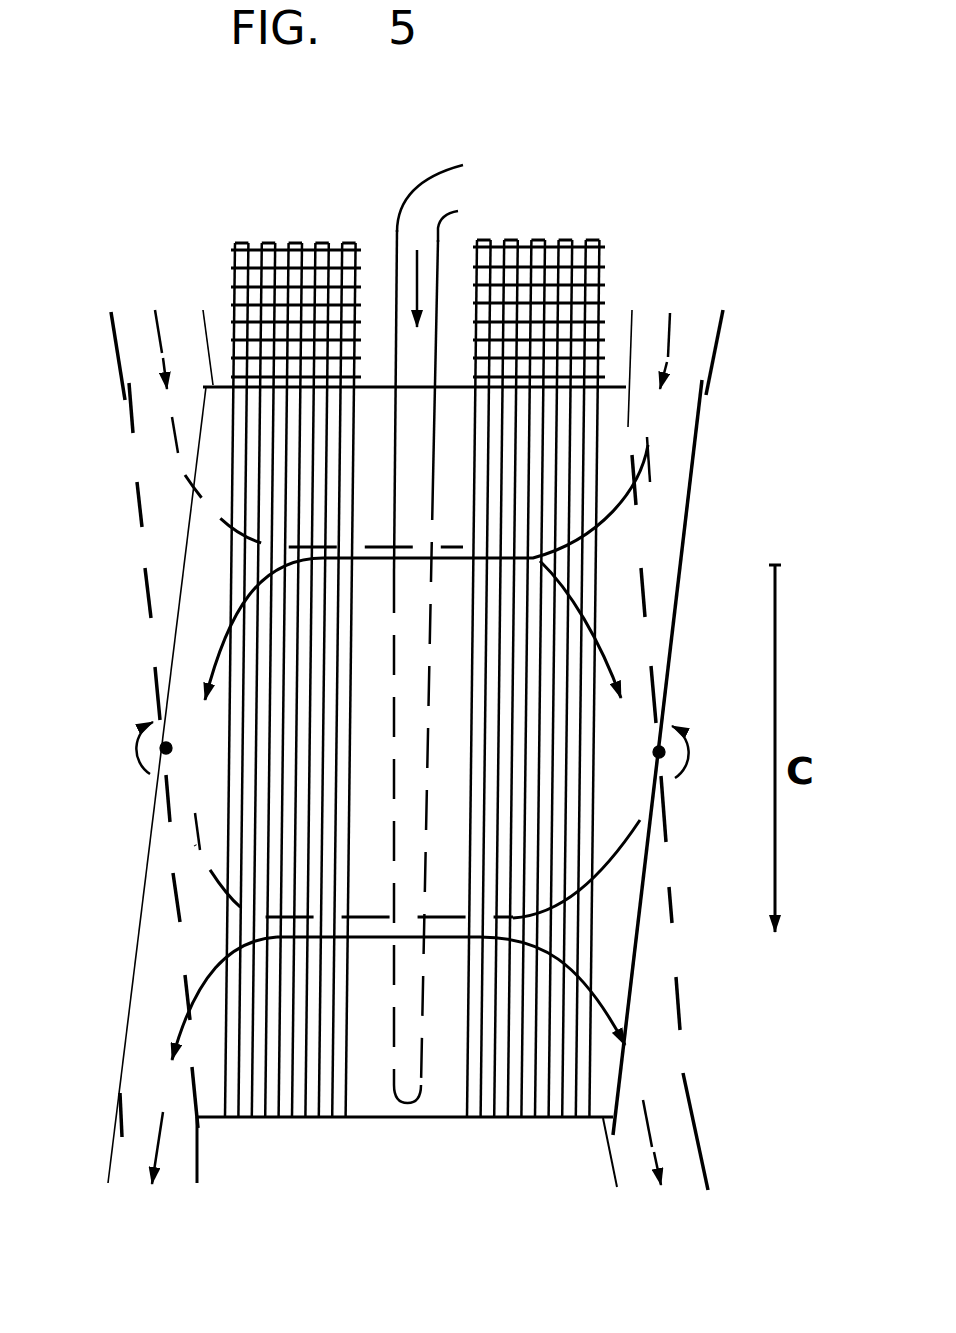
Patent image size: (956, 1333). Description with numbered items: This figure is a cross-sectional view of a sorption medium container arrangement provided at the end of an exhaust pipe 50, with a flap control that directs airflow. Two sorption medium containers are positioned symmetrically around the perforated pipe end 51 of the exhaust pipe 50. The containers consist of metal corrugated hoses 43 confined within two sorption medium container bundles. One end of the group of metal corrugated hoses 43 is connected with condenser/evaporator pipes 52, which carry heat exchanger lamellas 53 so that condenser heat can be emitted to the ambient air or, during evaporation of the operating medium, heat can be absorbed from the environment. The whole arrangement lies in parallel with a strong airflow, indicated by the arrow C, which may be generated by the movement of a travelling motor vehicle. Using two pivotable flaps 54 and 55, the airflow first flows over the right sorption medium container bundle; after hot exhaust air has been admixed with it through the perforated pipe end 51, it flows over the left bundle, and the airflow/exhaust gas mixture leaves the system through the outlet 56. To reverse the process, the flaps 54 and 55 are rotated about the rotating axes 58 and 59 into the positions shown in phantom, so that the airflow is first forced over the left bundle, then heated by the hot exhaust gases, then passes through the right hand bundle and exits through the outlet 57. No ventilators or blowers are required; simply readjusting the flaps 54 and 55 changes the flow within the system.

The metal corrugated hoses 43 is at (337, 1118).
The exhaust pipe 50 is at (458, 222).
The perforated pipe end 51 is at (412, 1108).
The condenser/evaporator pipes 52 is at (349, 242).
The heat exchanger lamellas 53 is at (232, 322).
The pivotable flap 54 is at (672, 660).
The pivotable flap 55 is at (147, 897).
The outlet 56 is at (177, 1173).
The outlet 57 is at (663, 1185).
The rotating axis 58 is at (661, 760).
The rotating axis 59 is at (148, 758).